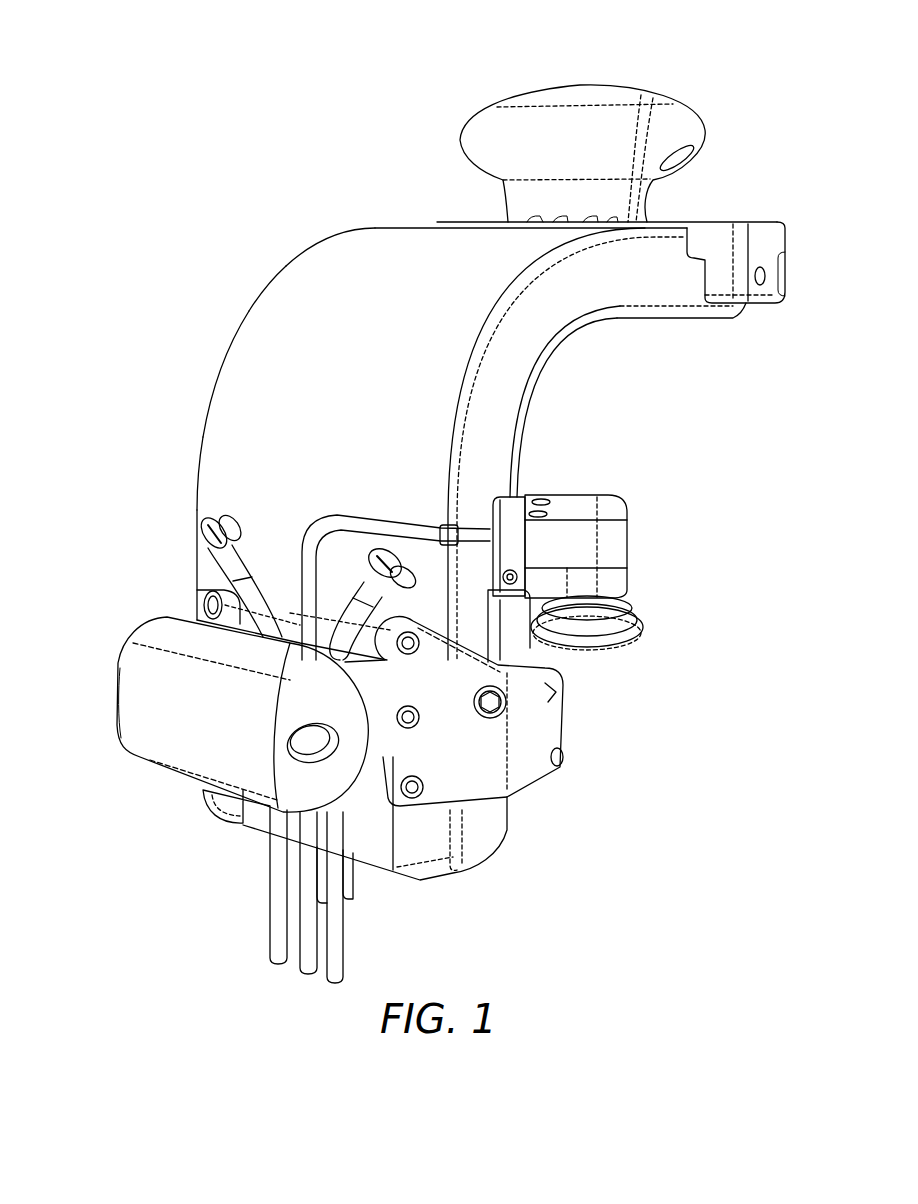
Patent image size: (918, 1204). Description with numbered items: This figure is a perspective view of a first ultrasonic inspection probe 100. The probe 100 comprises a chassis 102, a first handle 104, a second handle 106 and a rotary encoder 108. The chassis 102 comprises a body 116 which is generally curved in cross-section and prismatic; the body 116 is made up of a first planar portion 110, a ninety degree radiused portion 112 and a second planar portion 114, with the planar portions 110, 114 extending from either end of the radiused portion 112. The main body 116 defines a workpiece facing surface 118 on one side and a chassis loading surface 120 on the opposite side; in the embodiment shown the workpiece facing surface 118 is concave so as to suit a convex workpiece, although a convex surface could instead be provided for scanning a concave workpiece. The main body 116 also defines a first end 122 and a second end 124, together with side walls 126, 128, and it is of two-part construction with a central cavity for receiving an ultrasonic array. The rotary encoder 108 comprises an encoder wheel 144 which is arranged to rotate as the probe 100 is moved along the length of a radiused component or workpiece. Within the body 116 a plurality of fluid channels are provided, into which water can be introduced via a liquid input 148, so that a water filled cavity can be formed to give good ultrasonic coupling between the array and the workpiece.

The ultrasonic inspection probe 100 is at (195, 206).
The chassis 102 is at (305, 243).
The first handle 104 is at (671, 82).
The second handle 106 is at (113, 633).
The rotary encoder 108 is at (647, 520).
The first planar portion 110 is at (215, 522).
The 90 degree radiused portion 112 is at (226, 360).
The second planar portion 114 is at (378, 234).
The body 116 is at (515, 412).
The workpiece facing surface 118 is at (680, 322).
The chassis loading surface 120 is at (280, 290).
The first end 122 is at (740, 301).
The second end 124 is at (418, 882).
The side wall 126 is at (548, 350).
The side wall 128 is at (200, 433).
The encoder wheel 144 is at (645, 628).
The liquid input 148 is at (275, 942).